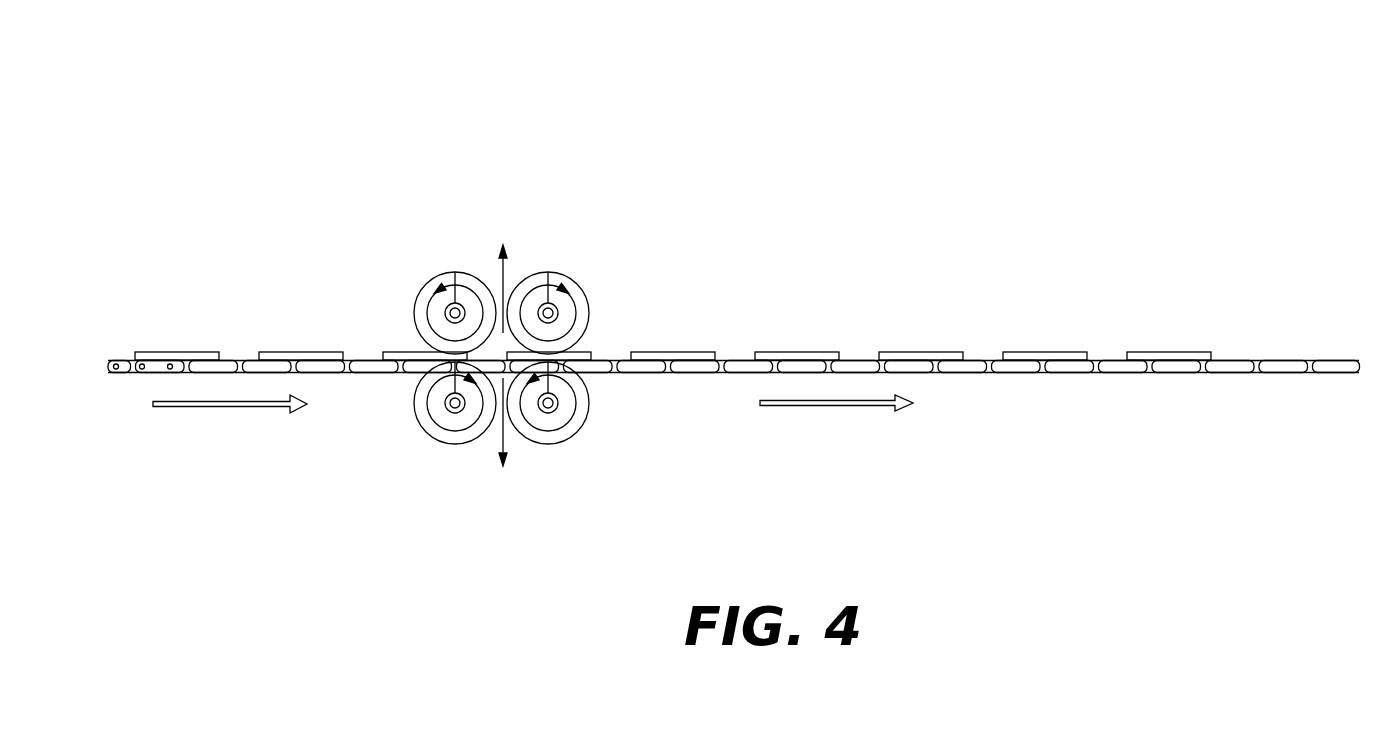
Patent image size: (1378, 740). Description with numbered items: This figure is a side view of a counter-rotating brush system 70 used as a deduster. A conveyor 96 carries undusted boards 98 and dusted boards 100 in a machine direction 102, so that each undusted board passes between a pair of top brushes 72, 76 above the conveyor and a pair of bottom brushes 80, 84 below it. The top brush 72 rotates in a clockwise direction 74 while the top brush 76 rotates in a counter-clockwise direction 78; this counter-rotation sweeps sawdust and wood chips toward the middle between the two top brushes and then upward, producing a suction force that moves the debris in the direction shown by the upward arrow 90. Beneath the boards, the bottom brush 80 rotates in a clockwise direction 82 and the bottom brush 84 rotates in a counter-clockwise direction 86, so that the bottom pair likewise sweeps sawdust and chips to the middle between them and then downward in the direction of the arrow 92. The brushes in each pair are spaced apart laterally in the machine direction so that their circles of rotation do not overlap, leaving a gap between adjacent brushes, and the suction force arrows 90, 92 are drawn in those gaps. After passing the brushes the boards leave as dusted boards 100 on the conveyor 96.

The counter-rotating brush system 70 is at (641, 116).
The top brush 72 is at (578, 316).
The clockwise direction 74 is at (540, 285).
The top brush 76 is at (432, 307).
The counter-clockwise direction 78 is at (463, 283).
The bottom brush 80 is at (448, 423).
The clockwise direction 82 is at (430, 420).
The bottom brush 84 is at (548, 423).
The counter-clockwise direction 86 is at (575, 423).
The upward suction force arrow 90 is at (495, 305).
The downward suction force arrow 92 is at (487, 450).
The conveyor 96 is at (1013, 373).
The undusted boards 98 is at (170, 352).
The dusted boards 100 is at (915, 351).
The machine direction 102 is at (821, 406).